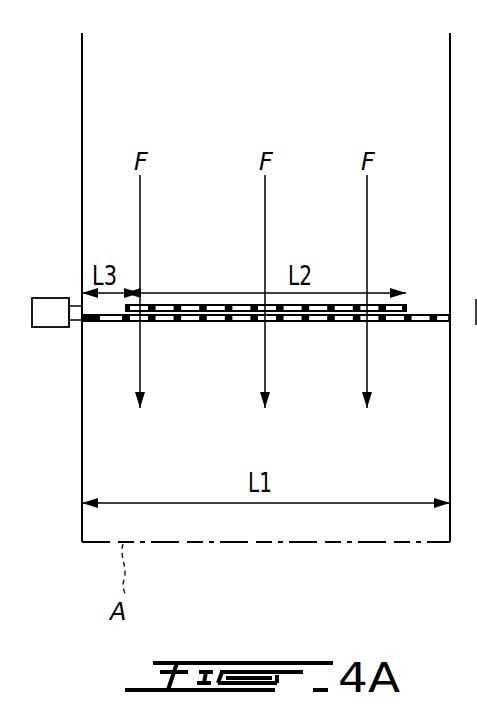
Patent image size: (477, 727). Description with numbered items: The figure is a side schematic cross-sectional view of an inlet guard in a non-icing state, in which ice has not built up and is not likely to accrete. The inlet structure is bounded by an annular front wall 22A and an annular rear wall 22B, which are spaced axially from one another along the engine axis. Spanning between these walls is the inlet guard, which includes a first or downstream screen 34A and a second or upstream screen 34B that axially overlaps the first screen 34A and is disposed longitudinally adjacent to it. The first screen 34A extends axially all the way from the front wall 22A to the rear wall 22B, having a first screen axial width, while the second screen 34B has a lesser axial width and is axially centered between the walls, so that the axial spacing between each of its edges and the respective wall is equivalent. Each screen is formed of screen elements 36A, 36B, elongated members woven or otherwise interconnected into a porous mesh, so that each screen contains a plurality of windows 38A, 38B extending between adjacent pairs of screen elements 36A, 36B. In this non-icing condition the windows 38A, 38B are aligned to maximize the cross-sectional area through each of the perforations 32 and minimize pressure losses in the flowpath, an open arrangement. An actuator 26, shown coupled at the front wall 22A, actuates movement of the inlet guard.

The front wall 22A is at (82, 78).
The rear wall 22B is at (450, 77).
The actuator 26 is at (57, 313).
The perforations 32 is at (266, 285).
The first screen 34A is at (115, 322).
The second screen 34B is at (152, 304).
The screen elements 36A is at (329, 322).
The screen elements 36B is at (330, 304).
The windows 38A is at (240, 322).
The windows 38B is at (243, 304).